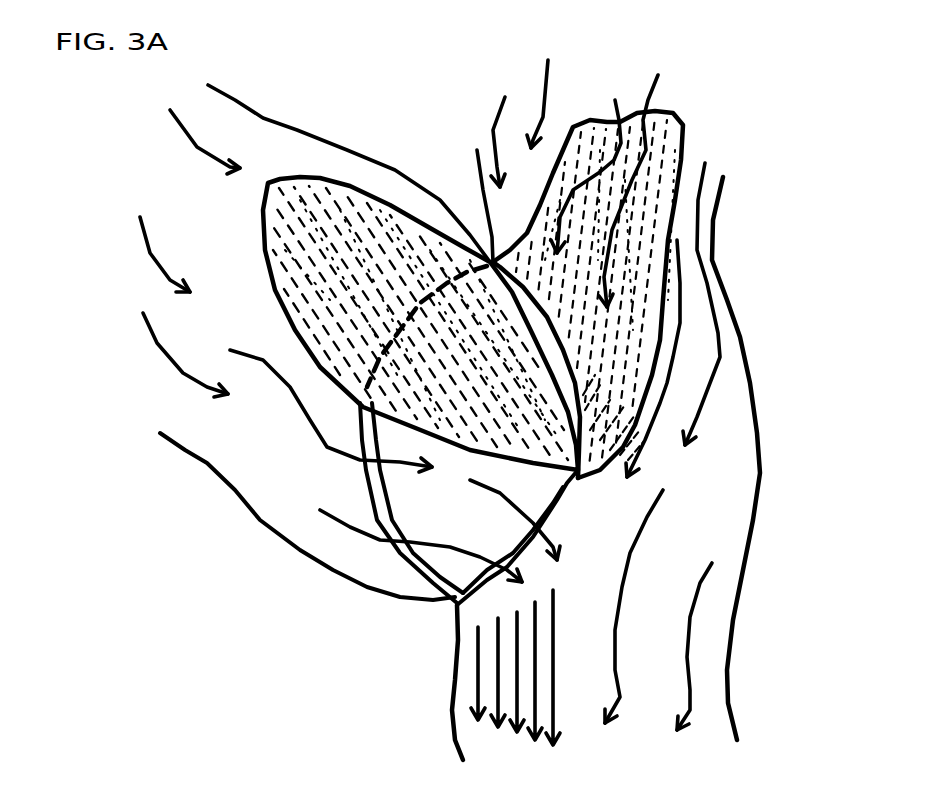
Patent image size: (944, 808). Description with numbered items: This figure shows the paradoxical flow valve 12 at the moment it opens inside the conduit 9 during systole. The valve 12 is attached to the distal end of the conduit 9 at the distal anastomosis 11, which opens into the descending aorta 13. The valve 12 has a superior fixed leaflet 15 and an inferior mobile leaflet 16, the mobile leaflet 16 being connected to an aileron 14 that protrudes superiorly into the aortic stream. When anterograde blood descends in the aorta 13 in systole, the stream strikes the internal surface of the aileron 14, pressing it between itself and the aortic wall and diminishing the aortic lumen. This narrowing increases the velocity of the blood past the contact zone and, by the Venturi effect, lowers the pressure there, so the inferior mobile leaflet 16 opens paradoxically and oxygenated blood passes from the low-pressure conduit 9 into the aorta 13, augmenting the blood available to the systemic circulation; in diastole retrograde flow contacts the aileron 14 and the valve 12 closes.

The conduit 9 is at (260, 520).
The distal anastomosis 11 is at (457, 605).
The paradoxical flow valve 12 is at (397, 547).
The aorta 13 is at (735, 632).
The aileron 14 is at (665, 307).
The superior fixed leaflet 15 is at (572, 373).
The inferior mobile leaflet 16 is at (322, 180).